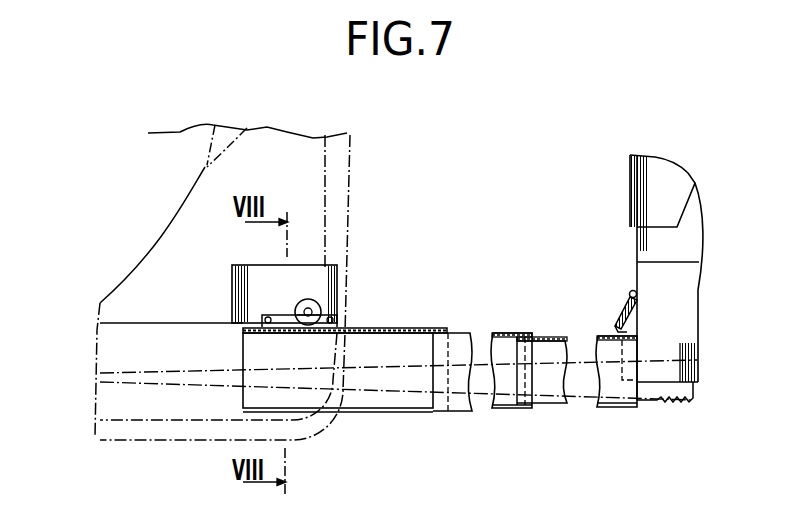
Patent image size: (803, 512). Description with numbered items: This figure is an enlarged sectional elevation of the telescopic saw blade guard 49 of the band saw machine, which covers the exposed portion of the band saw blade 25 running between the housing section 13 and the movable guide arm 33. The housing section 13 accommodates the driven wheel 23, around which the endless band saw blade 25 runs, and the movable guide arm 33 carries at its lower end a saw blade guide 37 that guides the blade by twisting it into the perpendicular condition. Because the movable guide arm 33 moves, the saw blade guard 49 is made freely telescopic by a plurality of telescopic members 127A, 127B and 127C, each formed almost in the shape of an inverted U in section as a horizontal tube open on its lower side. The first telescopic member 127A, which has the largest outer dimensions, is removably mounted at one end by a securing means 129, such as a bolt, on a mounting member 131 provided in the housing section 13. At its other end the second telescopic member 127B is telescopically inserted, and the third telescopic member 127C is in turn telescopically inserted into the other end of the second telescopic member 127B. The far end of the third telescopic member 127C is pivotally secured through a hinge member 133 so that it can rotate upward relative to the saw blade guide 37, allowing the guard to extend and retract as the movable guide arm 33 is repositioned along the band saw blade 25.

The housing section 13 is at (353, 178).
The driven wheel 23 is at (240, 133).
The band saw blade 25 is at (660, 397).
The movable guide arm 33 is at (647, 182).
The saw blade guide 37 is at (682, 288).
The saw blade guard 49 is at (448, 318).
The first telescopic member 127A is at (398, 327).
The second telescopic member 127B is at (507, 330).
The third telescopic member 127C is at (556, 333).
The securing means 129 is at (310, 305).
The mounting member 131 is at (250, 289).
The hinge member 133 is at (622, 302).